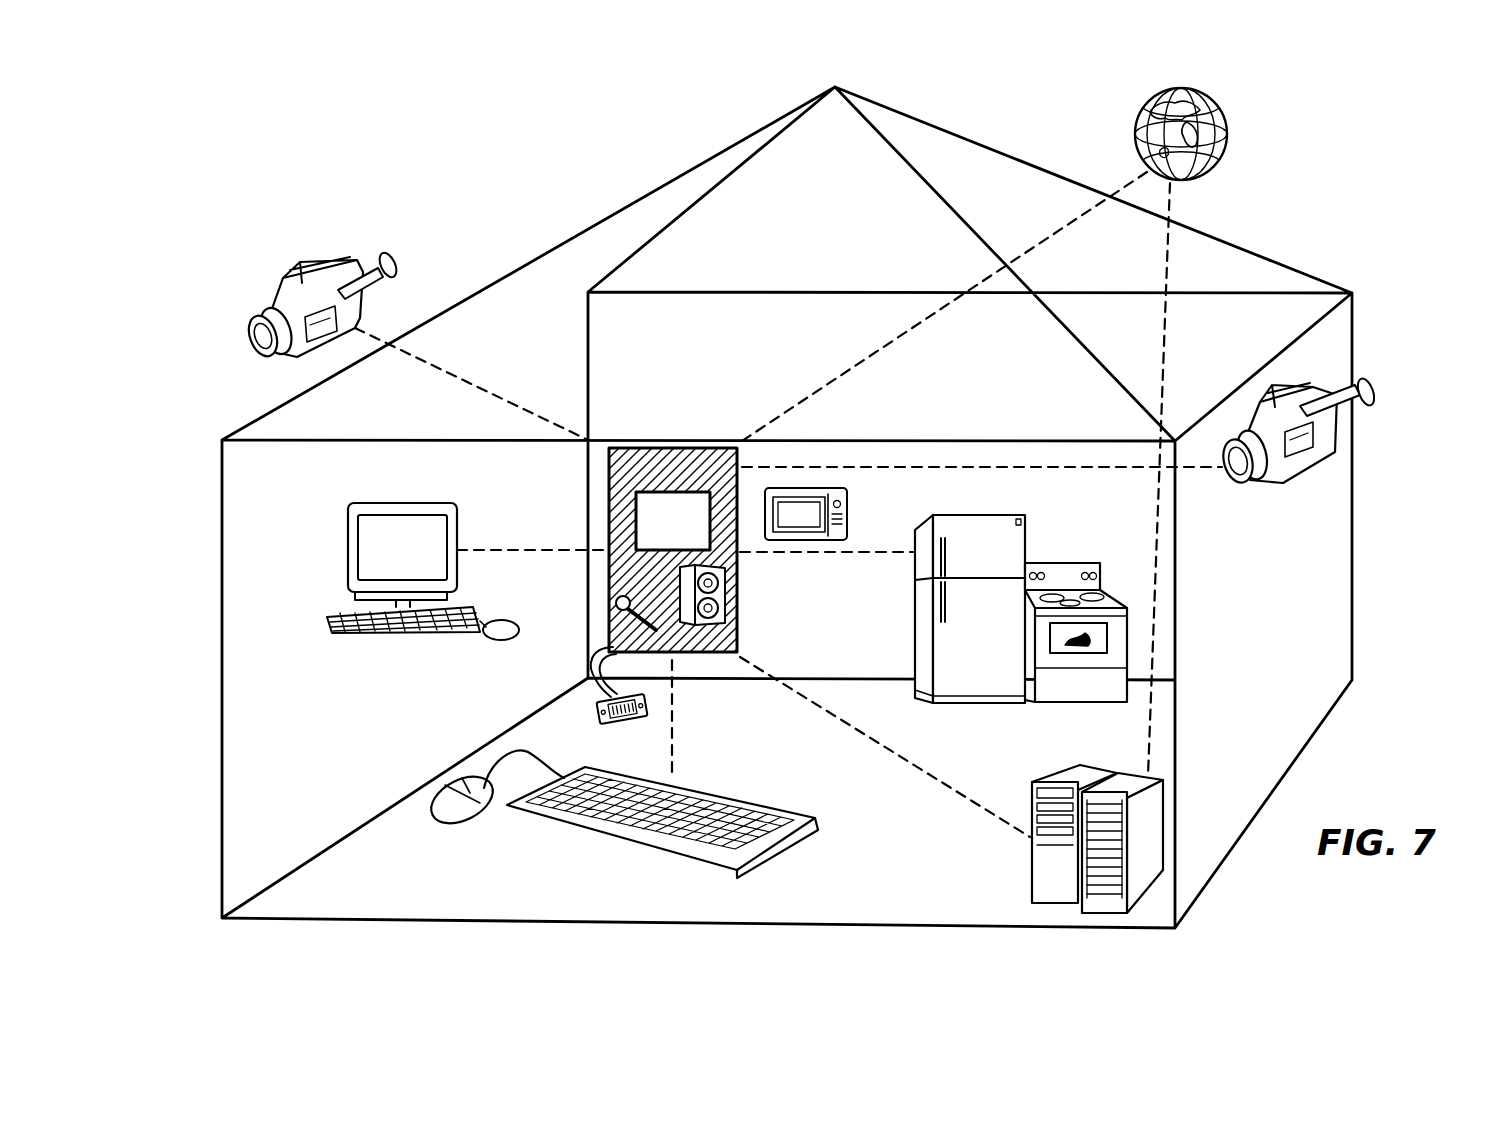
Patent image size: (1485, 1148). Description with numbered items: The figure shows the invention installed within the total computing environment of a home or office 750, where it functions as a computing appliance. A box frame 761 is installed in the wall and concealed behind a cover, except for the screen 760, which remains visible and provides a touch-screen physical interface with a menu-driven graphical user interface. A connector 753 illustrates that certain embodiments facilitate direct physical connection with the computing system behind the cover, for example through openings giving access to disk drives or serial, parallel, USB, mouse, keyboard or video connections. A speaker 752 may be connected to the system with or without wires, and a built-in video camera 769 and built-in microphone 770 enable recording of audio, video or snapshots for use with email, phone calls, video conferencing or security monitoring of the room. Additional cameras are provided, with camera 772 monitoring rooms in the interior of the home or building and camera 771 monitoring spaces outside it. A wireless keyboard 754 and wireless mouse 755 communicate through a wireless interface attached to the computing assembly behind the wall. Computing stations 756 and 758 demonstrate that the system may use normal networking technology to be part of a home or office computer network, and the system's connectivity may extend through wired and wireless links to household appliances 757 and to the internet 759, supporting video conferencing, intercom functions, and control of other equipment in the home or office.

The home or office 750 is at (1000, 152).
The speaker 752 is at (848, 512).
The connector 753 is at (625, 722).
The wireless keyboard 754 is at (735, 800).
The wireless mouse 755 is at (441, 780).
The computing station 756 is at (388, 503).
The household appliances 757 is at (975, 515).
The computing station 758 is at (1165, 808).
The internet 759 is at (1226, 138).
The screen 760 is at (634, 522).
The box frame 761 is at (604, 482).
The built-in video camera 769 is at (727, 587).
The built-in microphone 770 is at (612, 612).
The camera 771 is at (306, 270).
The camera 772 is at (1367, 385).